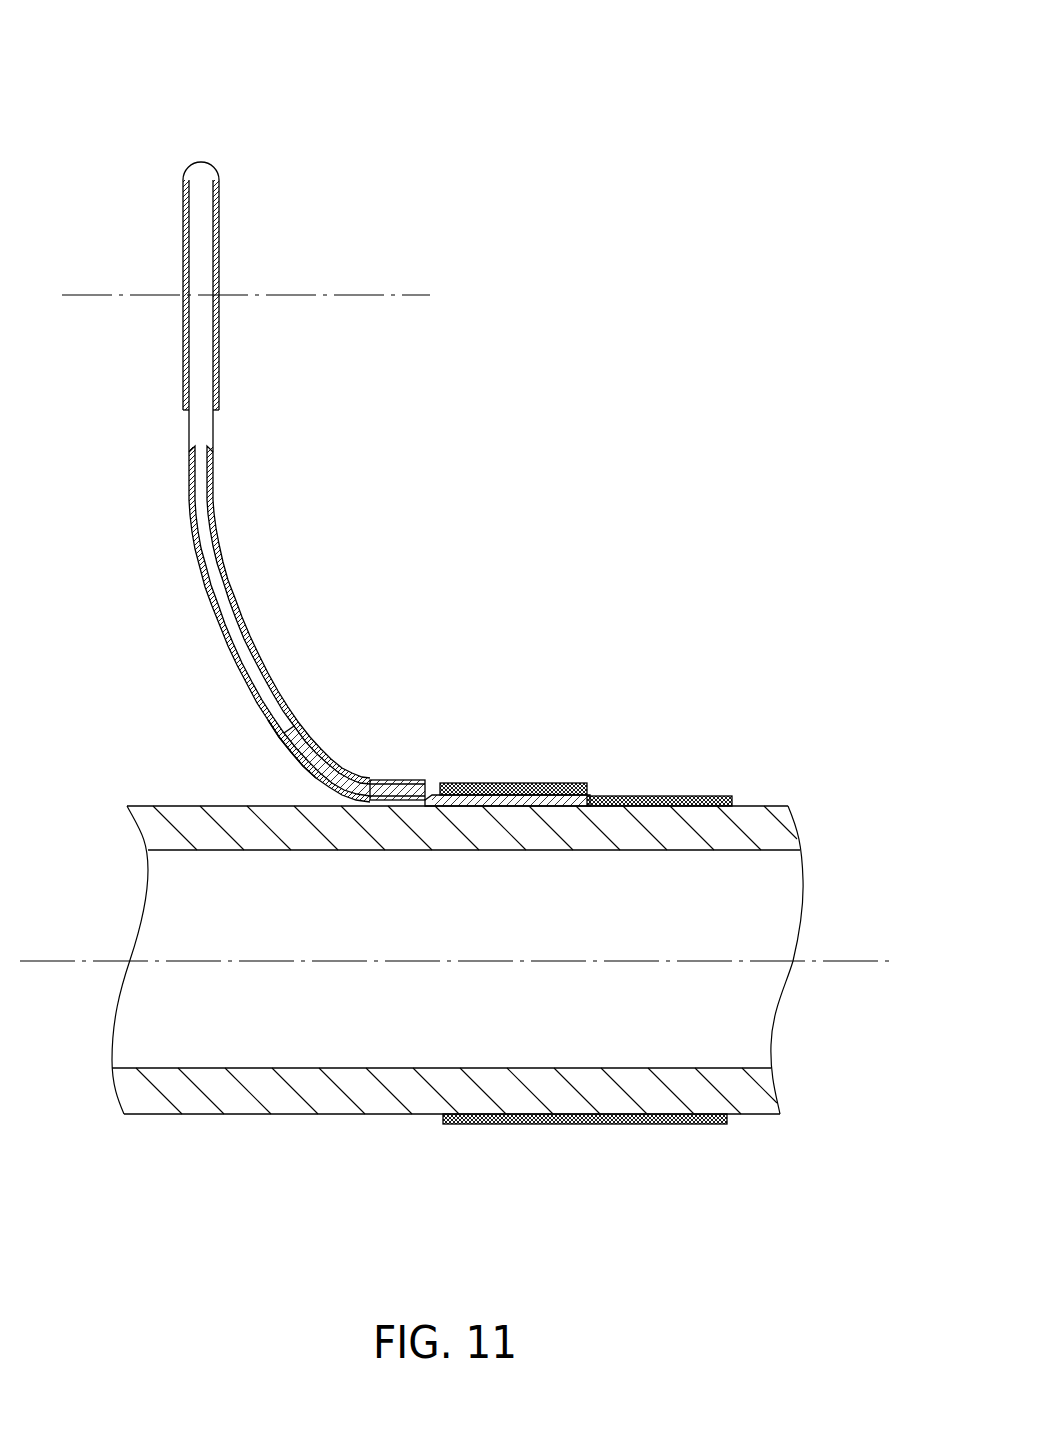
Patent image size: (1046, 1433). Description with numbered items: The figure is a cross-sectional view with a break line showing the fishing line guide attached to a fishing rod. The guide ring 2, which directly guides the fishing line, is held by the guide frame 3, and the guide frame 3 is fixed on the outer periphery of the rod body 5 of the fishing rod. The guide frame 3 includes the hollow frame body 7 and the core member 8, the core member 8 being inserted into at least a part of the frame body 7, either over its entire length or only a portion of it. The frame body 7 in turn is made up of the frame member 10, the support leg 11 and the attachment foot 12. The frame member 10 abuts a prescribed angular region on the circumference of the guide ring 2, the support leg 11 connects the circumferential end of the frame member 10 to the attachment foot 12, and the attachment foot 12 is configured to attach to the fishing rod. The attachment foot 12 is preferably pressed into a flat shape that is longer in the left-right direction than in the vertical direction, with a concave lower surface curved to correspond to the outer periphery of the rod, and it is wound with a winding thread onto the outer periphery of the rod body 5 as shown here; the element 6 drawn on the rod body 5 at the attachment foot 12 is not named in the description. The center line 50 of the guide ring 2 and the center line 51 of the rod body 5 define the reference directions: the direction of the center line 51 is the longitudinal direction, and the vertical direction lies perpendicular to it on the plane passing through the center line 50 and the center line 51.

The frame member 10 is at (198, 163).
The guide ring 2 is at (220, 262).
The center line of the guide ring 50 is at (405, 295).
The guide frame 3 is at (190, 500).
The support leg 11 is at (222, 553).
The frame body 7 is at (215, 640).
The core member 8 is at (332, 752).
The attachment foot 12 is at (490, 790).
The electrode 6 is at (535, 783).
The rod body 5 is at (236, 1115).
The center line of the rod body 51 is at (865, 960).